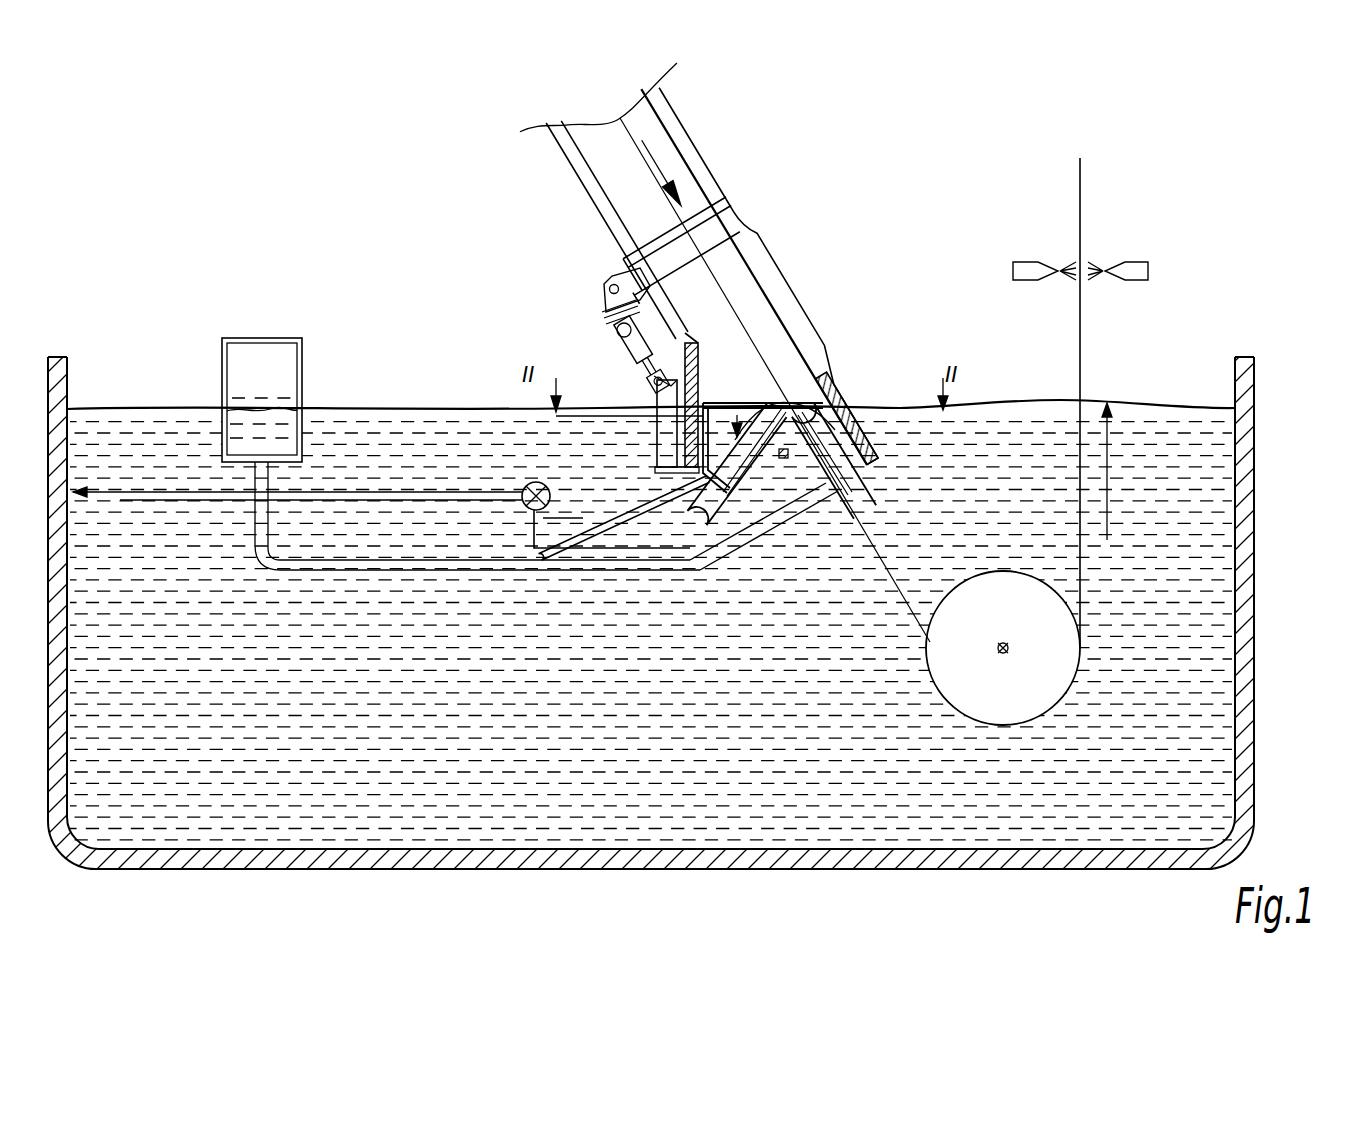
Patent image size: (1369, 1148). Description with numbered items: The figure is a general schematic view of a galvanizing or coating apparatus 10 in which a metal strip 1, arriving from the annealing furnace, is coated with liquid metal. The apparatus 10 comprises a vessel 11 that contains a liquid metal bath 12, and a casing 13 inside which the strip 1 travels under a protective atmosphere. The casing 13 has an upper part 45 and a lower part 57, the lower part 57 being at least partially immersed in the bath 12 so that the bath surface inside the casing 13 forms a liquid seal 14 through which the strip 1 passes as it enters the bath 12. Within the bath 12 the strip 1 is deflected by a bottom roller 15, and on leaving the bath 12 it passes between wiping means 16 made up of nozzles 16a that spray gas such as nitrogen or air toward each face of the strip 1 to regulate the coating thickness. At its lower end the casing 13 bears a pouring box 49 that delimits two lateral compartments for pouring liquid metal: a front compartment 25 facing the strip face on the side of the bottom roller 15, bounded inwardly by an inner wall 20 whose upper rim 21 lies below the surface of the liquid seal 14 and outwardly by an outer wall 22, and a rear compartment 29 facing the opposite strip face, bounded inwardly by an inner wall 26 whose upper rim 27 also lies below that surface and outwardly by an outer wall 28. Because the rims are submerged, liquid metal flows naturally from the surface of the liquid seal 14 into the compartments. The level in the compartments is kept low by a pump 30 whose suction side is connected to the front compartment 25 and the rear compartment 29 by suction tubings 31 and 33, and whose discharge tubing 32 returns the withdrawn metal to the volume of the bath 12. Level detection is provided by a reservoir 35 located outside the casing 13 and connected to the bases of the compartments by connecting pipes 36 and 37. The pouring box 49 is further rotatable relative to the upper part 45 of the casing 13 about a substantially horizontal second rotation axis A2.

The metal strip 1 is at (630, 150).
The galvanizing apparatus 10 is at (1276, 545).
The vessel 11 is at (1240, 752).
The liquid metal bath 12 is at (520, 762).
The casing 13 is at (812, 279).
The liquid seal 14 is at (772, 410).
The roller 15 is at (1003, 648).
The wiping means 16 is at (1119, 232).
The nozzles 16a is at (1028, 264).
The inner wall 20 is at (803, 505).
The upper rim 21 is at (830, 386).
The outer wall 22 is at (862, 470).
The front compartment 25 is at (870, 428).
The inner wall 26 is at (760, 456).
The upper rim 27 is at (782, 335).
The outer wall 28 is at (702, 403).
The rear compartment 29 is at (737, 415).
The pump 30 is at (532, 484).
The suction tubing 31 is at (783, 522).
The discharge tubing 32 is at (205, 497).
The suction tubing 33 is at (625, 520).
The reservoir 35 is at (208, 399).
The connecting pipe 36 is at (338, 572).
The connecting pipe 37 is at (592, 530).
The upper part 45 is at (754, 210).
The pouring box 49 is at (654, 403).
The lower part 57 is at (860, 409).
The second rotation axis A2 is at (783, 467).